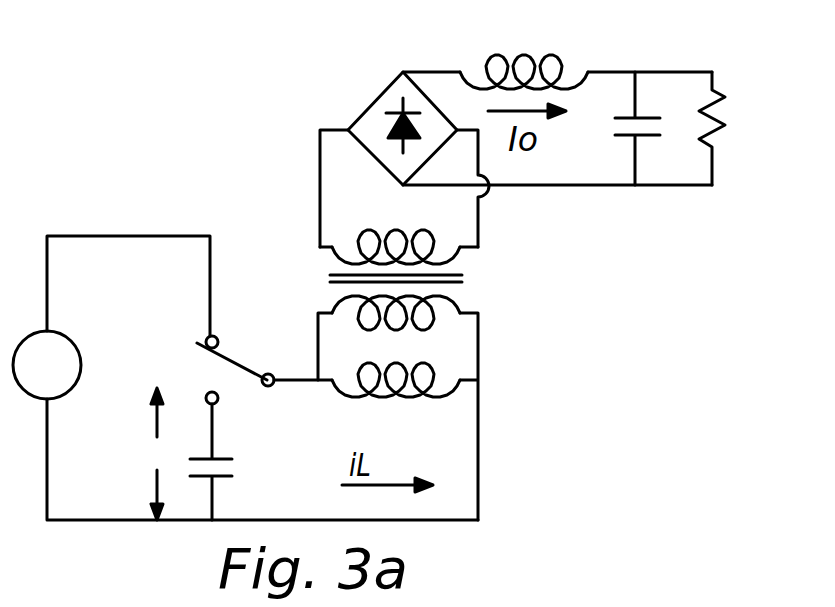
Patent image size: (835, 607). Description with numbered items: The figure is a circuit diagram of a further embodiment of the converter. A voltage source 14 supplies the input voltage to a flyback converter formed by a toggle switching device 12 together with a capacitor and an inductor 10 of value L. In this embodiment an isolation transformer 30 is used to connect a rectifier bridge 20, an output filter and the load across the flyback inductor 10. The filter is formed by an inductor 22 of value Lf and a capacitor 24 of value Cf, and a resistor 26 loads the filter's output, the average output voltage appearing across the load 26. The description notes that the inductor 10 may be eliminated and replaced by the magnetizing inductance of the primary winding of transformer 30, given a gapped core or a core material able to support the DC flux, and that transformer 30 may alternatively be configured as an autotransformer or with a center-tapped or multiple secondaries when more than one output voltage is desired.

The inductor 10 is at (425, 399).
The toggle switching device 12 is at (247, 344).
The voltage source 14 is at (62, 334).
The bridge rectifier 20 is at (380, 150).
The inductor 22 is at (560, 63).
The capacitor 24 is at (642, 137).
The resistor 26 is at (703, 102).
The isolation transformer 30 is at (330, 276).